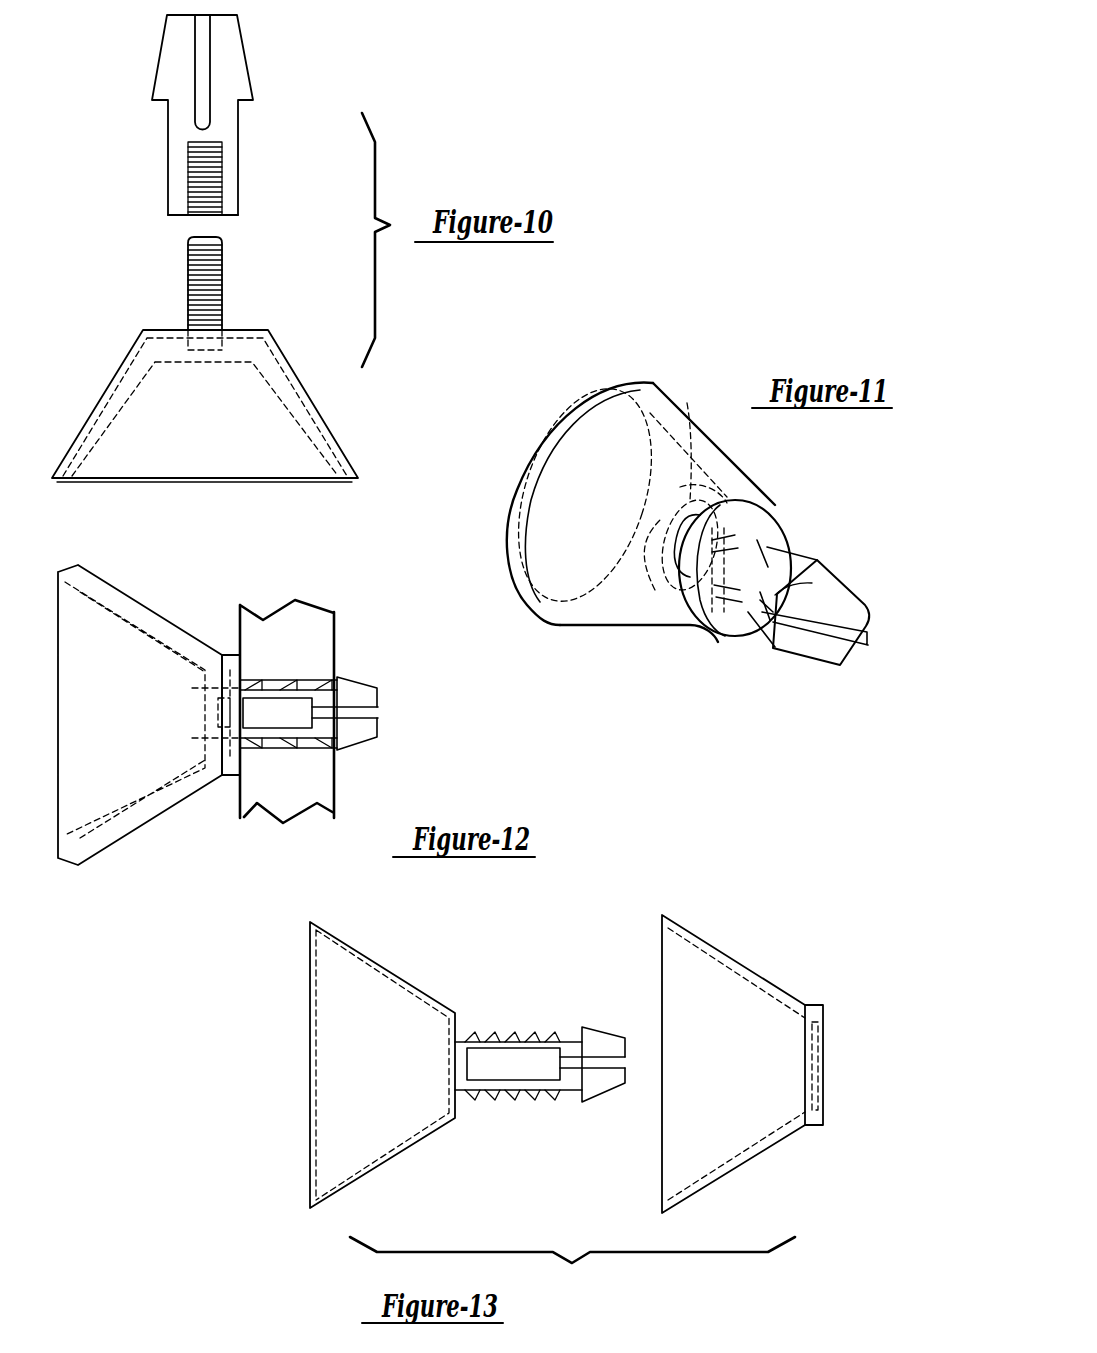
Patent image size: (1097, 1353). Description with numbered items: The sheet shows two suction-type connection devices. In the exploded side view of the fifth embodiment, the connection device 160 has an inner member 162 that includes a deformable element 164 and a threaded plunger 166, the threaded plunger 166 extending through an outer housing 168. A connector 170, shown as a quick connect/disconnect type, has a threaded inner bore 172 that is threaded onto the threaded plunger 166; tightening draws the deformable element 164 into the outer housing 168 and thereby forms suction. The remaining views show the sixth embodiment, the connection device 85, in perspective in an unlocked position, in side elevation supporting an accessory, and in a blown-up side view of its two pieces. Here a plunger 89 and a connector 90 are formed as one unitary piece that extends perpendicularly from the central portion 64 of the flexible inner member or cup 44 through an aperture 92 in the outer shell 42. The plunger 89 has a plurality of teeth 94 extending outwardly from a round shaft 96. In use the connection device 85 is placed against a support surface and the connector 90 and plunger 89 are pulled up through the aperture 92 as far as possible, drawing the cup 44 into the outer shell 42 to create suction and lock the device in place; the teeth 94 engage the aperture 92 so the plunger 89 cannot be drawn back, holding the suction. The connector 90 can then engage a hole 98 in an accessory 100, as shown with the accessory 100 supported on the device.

In FIG. 10, the connection device 160 is at (146, 115).
In FIG. 10, the connector 170 is at (260, 115).
In FIG. 10, the threaded inner bore 172 is at (250, 229).
In FIG. 10, the threaded plunger 166 is at (260, 283).
In FIG. 10, the outer housing 168 is at (206, 398).
In FIG. 10, the deformable element 164 is at (147, 484).
In FIG. 10, the inner member 162 is at (301, 472).
In FIG. 11, the flexible inner member or cup 44 is at (618, 498).
In FIG. 13, the flexible inner member or cup 44 is at (393, 1065).
In FIG. 11, the outer shell 42 is at (619, 651).
In FIG. 13, the outer shell 42 is at (742, 1073).
In FIG. 11, the central portion 64 is at (663, 550).
In FIG. 11, the round shaft 96 is at (682, 596).
In FIG. 12, the round shaft 96 is at (254, 715).
In FIG. 11, the aperture 92 is at (735, 598).
In FIG. 13, the aperture 92 is at (782, 1063).
In FIG. 11, the teeth 94 is at (770, 530).
In FIG. 12, the teeth 94 is at (305, 776).
In FIG. 13, the teeth 94 is at (512, 1109).
In FIG. 11, the plunger 89 is at (807, 568).
In FIG. 12, the plunger 89 is at (338, 694).
In FIG. 13, the plunger 89 is at (540, 1097).
In FIG. 11, the connector 90 is at (830, 603).
In FIG. 13, the connector 90 is at (581, 1028).
In FIG. 11, the connection device 85 is at (814, 732).
In FIG. 12, the connection device 85 is at (203, 885).
In FIG. 13, the connection device 85 is at (837, 1210).
In FIG. 12, the accessory 100 is at (333, 711).
In FIG. 12, the hole 98 is at (358, 743).